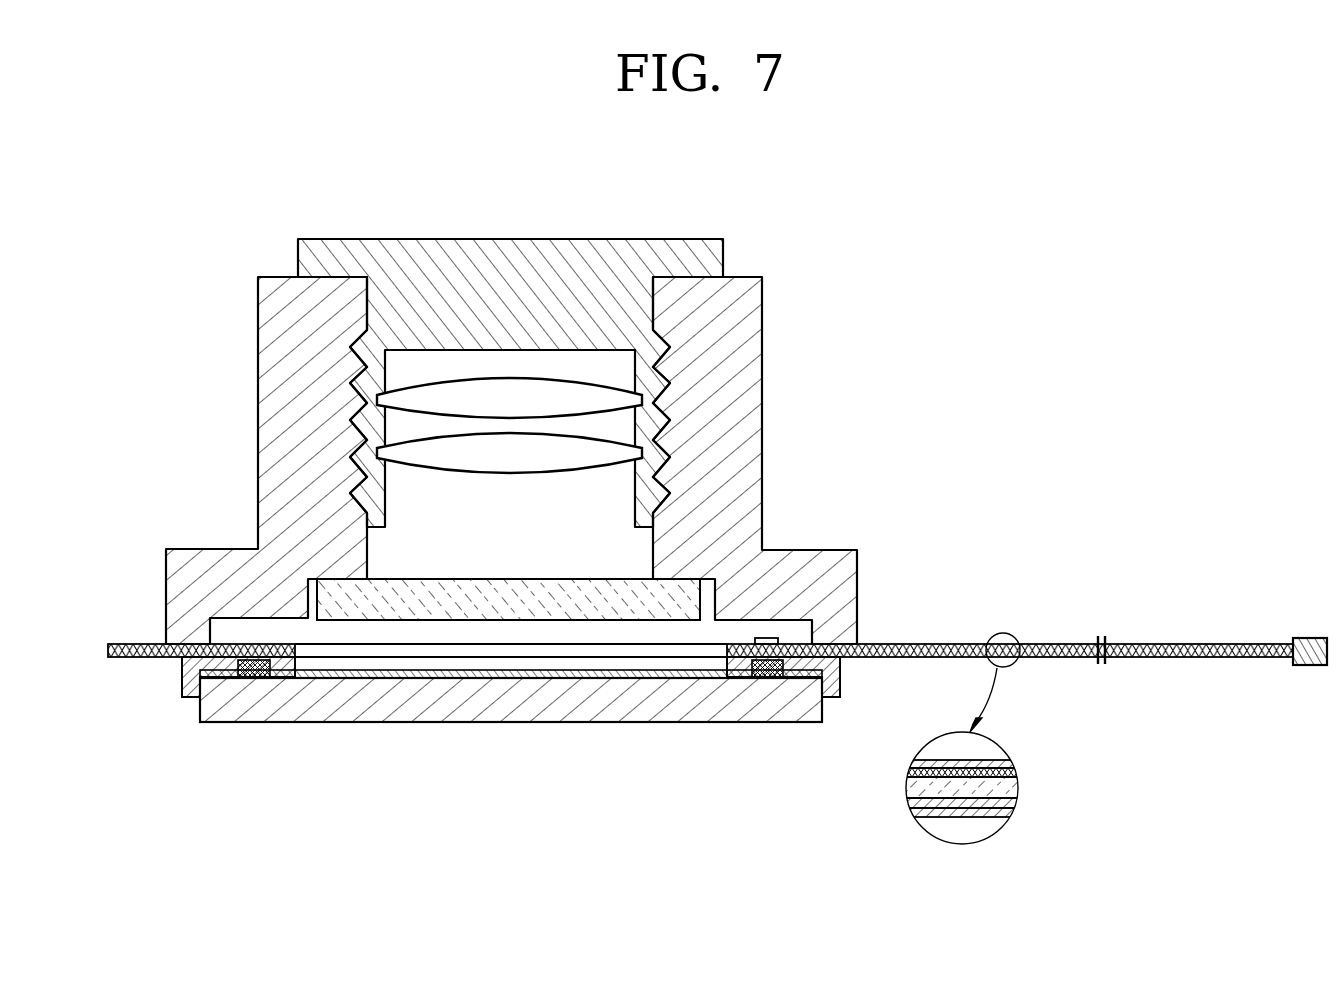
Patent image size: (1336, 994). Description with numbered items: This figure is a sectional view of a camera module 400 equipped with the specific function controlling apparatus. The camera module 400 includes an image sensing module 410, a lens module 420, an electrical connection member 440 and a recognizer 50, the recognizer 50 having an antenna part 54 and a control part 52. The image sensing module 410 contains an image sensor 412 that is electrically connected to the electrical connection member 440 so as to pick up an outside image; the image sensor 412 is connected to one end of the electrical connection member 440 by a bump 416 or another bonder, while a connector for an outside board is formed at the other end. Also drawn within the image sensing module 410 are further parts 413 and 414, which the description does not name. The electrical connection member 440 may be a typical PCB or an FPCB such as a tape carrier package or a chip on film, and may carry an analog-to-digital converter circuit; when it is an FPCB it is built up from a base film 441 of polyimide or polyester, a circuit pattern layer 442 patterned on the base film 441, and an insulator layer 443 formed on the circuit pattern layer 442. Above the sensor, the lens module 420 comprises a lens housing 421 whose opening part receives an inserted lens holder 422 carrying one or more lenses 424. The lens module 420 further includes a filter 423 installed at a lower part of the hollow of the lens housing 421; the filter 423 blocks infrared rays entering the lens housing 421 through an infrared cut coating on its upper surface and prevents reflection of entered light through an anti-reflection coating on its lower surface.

The camera module 400 is at (305, 205).
The image sensing module 410 is at (400, 777).
The image sensor 412 is at (333, 707).
The image sensor 413 is at (397, 680).
The fixing member 414 is at (192, 698).
The bump 416 is at (762, 670).
The lens module 420 is at (853, 257).
The lens housing 421 is at (722, 352).
The lens holder 422 is at (712, 259).
The filter 423 is at (712, 563).
The lenses 424 is at (618, 453).
The electrical connection member 440 is at (880, 658).
The base film 441 is at (1015, 788).
The circuit pattern layer 442 is at (1015, 803).
The insulator layer 443 is at (1010, 762).
The recognizer 50 is at (922, 552).
The control part 52 is at (766, 637).
The antenna part 54 is at (808, 642).